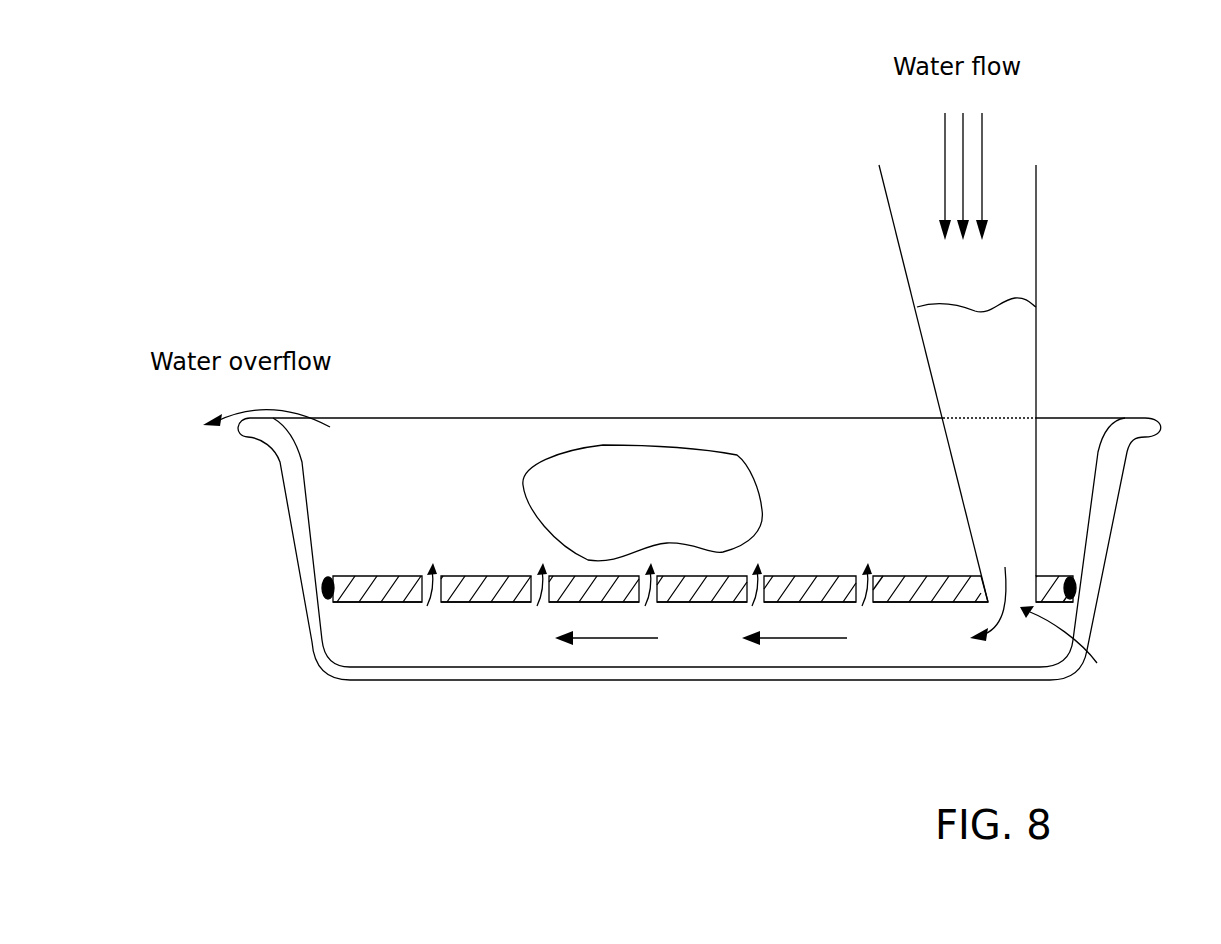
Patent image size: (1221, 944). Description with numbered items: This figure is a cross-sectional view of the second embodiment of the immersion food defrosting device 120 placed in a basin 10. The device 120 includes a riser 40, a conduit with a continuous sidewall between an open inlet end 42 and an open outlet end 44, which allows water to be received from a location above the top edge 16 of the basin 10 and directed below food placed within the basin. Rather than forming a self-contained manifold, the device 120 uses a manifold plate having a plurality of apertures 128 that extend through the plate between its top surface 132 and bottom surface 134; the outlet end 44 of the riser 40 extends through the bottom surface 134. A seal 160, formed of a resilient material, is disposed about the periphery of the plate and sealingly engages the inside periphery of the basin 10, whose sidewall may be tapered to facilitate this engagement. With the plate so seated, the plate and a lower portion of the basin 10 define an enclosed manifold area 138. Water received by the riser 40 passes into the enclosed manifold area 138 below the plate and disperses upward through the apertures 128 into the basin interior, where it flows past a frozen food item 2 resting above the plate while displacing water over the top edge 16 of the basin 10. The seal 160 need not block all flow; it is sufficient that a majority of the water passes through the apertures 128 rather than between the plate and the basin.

The frozen food item 2 is at (643, 503).
The basin 10 is at (1138, 425).
The top edge of the basin 16 is at (527, 418).
The riser 40 is at (875, 226).
The open inlet end 42 is at (1018, 162).
The open outlet end 44 is at (1075, 642).
The immersion food defrosting device 120 is at (850, 341).
The apertures 128 is at (426, 606).
The top surface 132 is at (820, 575).
The bottom surface 134 is at (802, 603).
The enclosed manifold area 138 is at (701, 633).
The seal 160 is at (322, 596).